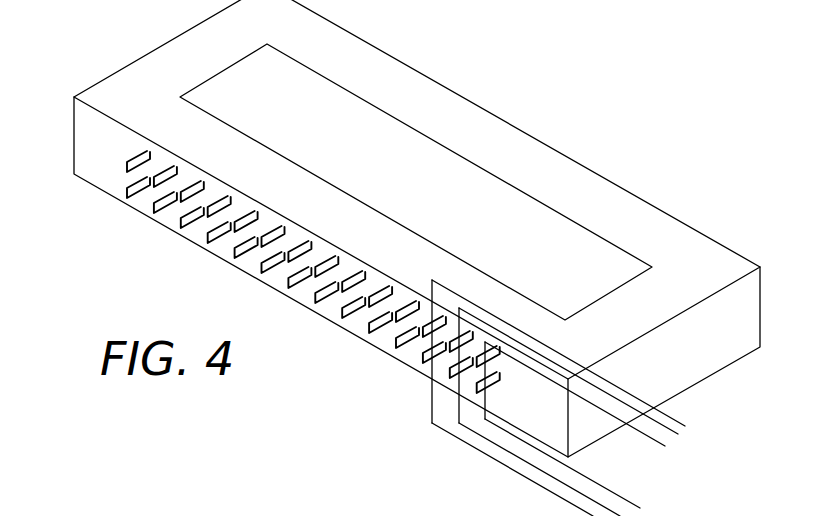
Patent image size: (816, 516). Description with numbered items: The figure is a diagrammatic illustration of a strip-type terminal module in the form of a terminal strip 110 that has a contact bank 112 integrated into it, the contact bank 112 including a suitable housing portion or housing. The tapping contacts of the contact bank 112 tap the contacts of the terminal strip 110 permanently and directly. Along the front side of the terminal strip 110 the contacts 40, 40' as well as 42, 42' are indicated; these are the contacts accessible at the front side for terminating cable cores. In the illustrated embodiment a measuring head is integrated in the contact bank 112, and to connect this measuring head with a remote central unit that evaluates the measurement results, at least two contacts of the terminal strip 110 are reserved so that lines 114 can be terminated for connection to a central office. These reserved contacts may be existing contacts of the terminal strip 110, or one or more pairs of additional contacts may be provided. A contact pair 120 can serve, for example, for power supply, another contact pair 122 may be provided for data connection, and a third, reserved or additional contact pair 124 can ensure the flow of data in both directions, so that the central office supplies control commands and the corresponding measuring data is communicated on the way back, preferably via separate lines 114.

The terminal strip 110 is at (173, 55).
The contact bank 112 is at (330, 100).
The contact 40 is at (229, 249).
The contact 42 is at (81, 145).
The contact 40' is at (249, 270).
The contact 42' is at (152, 233).
The contact pair 120 is at (432, 347).
The contact pair 122 is at (462, 385).
The contact pair 124 is at (507, 395).
The lines 114 is at (620, 498).